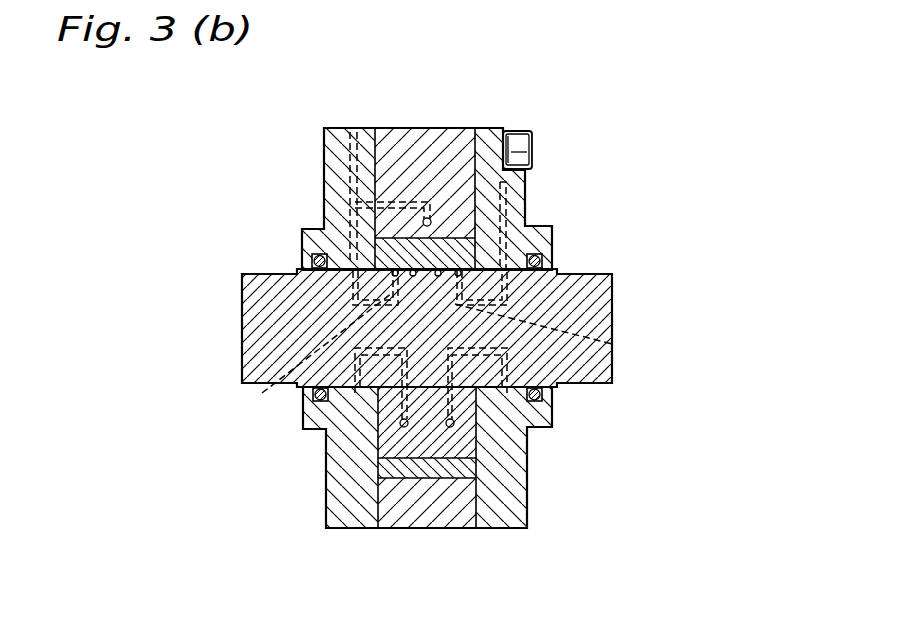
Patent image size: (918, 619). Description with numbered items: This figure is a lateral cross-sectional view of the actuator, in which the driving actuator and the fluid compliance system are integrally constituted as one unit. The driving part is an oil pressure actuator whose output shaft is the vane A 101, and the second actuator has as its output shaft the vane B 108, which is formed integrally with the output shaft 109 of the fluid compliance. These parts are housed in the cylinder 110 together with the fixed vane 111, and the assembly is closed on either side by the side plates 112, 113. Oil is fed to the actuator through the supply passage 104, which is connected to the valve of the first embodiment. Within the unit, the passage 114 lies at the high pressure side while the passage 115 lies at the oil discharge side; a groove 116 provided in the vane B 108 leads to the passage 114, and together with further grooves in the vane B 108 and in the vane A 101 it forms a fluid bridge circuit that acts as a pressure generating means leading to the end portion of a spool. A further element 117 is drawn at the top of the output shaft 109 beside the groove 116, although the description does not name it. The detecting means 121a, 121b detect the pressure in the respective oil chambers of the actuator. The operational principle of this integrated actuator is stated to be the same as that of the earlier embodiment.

The vane A 101 is at (435, 470).
The supply passage 104 is at (398, 200).
The vane B 108 is at (407, 438).
The output shaft 109 is at (262, 342).
The cylinder 110 is at (460, 508).
The fixed vane 111 is at (450, 192).
The side plate 112 is at (343, 500).
The side plate 113 is at (517, 459).
The passage at the high pressure side 114 is at (612, 344).
The passage at the oil discharge side 115 is at (262, 393).
The groove 116 is at (460, 271).
The left upper port 117 is at (397, 272).
The detecting means 121a is at (455, 396).
The detecting means 121b is at (400, 407).